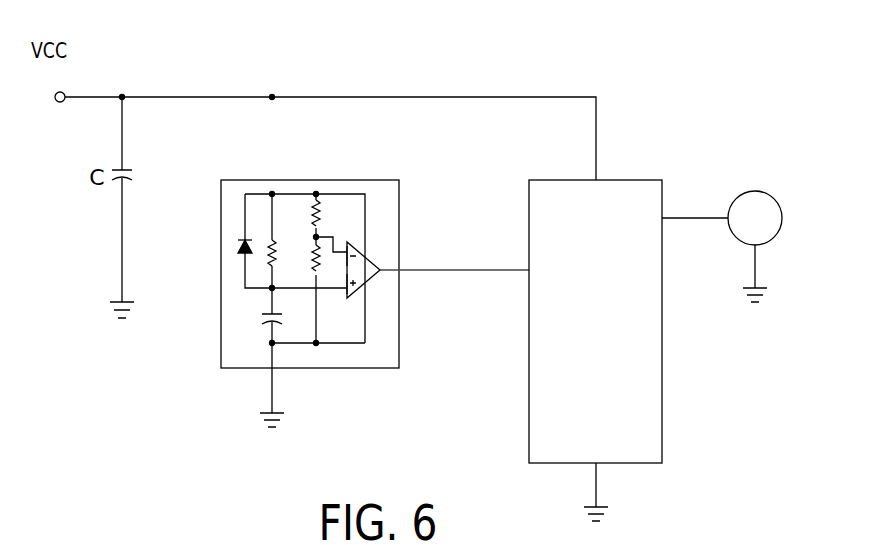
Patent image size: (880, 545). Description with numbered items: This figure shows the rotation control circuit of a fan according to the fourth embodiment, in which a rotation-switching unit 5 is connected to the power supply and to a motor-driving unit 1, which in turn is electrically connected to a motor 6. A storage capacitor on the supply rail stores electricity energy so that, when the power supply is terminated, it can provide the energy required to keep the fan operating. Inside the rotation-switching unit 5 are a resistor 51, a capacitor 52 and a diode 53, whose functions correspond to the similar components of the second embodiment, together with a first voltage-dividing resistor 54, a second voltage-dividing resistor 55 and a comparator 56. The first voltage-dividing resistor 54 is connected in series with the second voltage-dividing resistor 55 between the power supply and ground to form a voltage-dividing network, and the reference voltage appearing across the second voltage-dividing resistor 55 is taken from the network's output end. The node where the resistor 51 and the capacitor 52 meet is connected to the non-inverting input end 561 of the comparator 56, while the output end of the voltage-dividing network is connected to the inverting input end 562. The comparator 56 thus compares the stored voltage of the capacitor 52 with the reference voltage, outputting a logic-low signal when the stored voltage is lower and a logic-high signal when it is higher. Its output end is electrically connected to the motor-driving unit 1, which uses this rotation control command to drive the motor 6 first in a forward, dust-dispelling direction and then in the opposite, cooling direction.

The motor-driving unit 1 is at (632, 457).
The rotation-switching unit 5 is at (237, 368).
The resistor 51 is at (272, 242).
The capacitor 52 is at (266, 315).
The diode 53 is at (236, 247).
The first voltage-dividing resistor 54 is at (316, 203).
The second voltage-dividing resistor 55 is at (315, 258).
The comparator 56 is at (373, 273).
The non-inverting input end 561 is at (347, 294).
The inverting input end 562 is at (347, 243).
The motor 6 is at (743, 196).